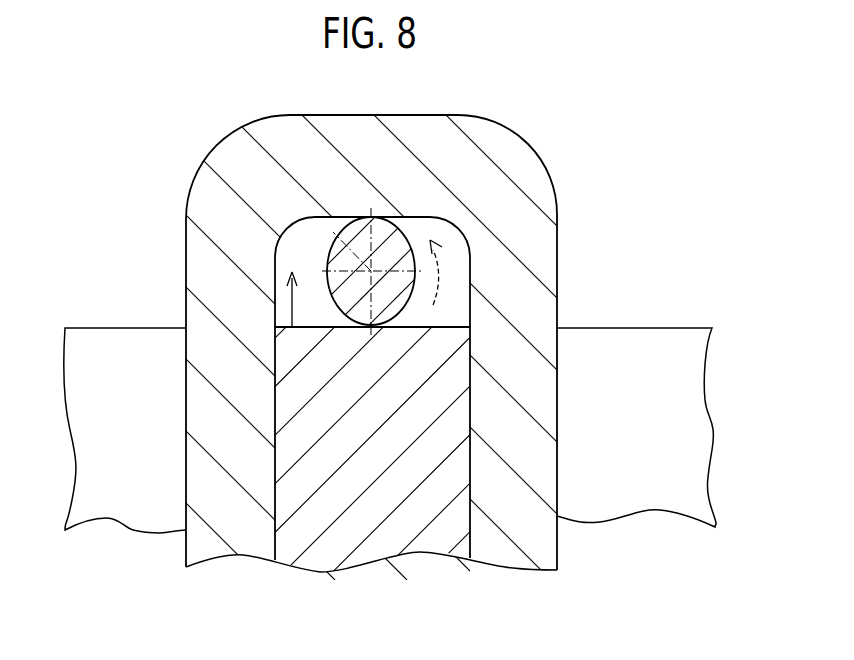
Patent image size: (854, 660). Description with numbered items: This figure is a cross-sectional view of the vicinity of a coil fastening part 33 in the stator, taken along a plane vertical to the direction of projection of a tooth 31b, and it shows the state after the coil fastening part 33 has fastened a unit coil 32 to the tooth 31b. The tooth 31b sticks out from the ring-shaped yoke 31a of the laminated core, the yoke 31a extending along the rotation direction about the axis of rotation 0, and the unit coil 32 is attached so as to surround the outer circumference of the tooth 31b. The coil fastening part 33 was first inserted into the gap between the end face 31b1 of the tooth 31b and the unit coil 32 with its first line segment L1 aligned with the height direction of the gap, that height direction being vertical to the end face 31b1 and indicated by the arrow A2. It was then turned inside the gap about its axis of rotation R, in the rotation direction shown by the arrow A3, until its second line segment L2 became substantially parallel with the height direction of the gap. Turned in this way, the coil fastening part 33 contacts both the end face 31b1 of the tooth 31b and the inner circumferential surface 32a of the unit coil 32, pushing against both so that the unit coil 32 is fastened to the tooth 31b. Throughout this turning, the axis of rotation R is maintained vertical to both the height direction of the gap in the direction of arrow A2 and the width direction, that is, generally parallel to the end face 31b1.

The unit coil 32 is at (517, 130).
The inner circumferential surface of the unit coil 32a is at (430, 216).
The coil fastening part 33 is at (328, 250).
The yoke 31a is at (638, 327).
The tooth 31b is at (370, 565).
The end face of the tooth 31b1 is at (310, 328).
The first line segment L1 is at (330, 258).
The second line segment L2 is at (402, 216).
The axis of rotation of the coil fastening part R is at (345, 217).
The arrow indicating the height direction of the gap A2 is at (288, 310).
The arrow indicating the rotation direction A3 is at (437, 267).
The axis of rotation 0 is at (462, 324).